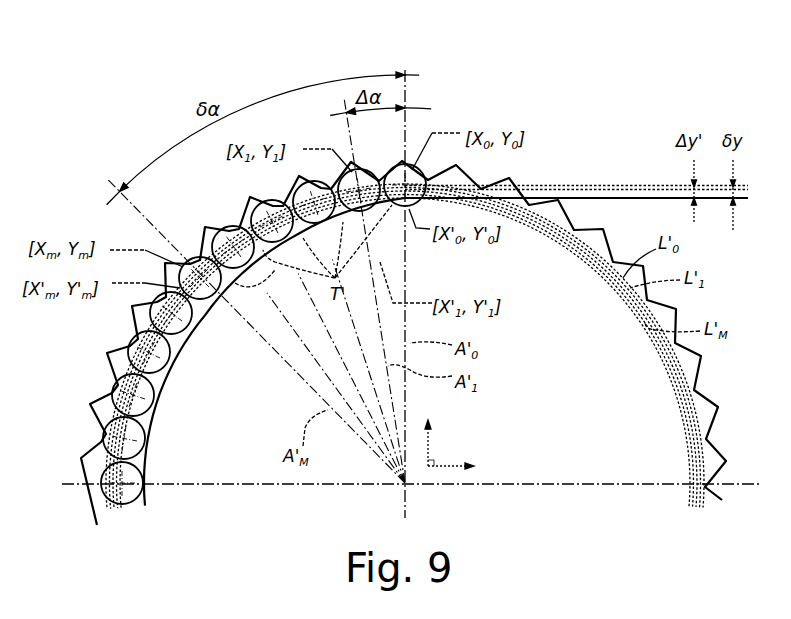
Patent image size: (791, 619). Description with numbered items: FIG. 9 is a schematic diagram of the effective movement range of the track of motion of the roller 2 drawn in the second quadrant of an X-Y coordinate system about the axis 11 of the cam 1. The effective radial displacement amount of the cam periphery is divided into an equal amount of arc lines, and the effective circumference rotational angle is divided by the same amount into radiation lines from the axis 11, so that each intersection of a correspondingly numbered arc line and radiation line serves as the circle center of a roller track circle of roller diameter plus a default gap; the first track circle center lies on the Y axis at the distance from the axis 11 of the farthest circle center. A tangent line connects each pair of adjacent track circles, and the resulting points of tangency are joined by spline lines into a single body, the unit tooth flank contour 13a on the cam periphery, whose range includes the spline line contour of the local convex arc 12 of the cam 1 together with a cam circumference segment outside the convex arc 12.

The cam 1 is at (246, 471).
The roller 2 is at (135, 493).
The axis 11 is at (406, 485).
The convex arc 12 is at (397, 212).
The unit tooth flank contour 13a is at (232, 290).